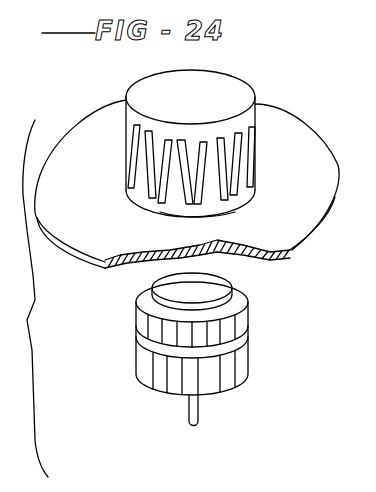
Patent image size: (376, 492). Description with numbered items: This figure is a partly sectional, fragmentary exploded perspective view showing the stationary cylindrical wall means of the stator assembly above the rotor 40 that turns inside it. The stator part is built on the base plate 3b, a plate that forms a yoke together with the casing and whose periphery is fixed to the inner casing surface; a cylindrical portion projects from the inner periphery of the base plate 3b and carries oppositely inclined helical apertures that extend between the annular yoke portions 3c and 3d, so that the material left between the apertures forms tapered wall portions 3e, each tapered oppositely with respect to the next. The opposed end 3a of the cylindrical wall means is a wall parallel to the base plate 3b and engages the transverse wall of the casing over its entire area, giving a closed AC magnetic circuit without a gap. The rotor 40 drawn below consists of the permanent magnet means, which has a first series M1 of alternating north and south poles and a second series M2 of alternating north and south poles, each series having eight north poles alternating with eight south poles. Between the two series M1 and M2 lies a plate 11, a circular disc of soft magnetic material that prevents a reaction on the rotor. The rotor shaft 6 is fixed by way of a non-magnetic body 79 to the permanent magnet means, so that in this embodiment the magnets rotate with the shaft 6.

The opposed end of the cylindrical wall means 3a is at (227, 88).
The base plate 3b is at (310, 242).
The annular yoke portion 3c is at (227, 130).
The annular yoke portion 3d is at (233, 212).
The tapered wall portions 3e is at (243, 163).
The non-magnetic body 79 is at (217, 288).
The first series of alternating north and south poles M1 is at (246, 323).
The plate 11 is at (246, 350).
The second series of alternating north and south poles M2 is at (216, 368).
The rotor 40 is at (243, 340).
The rotor shaft 6 is at (198, 410).